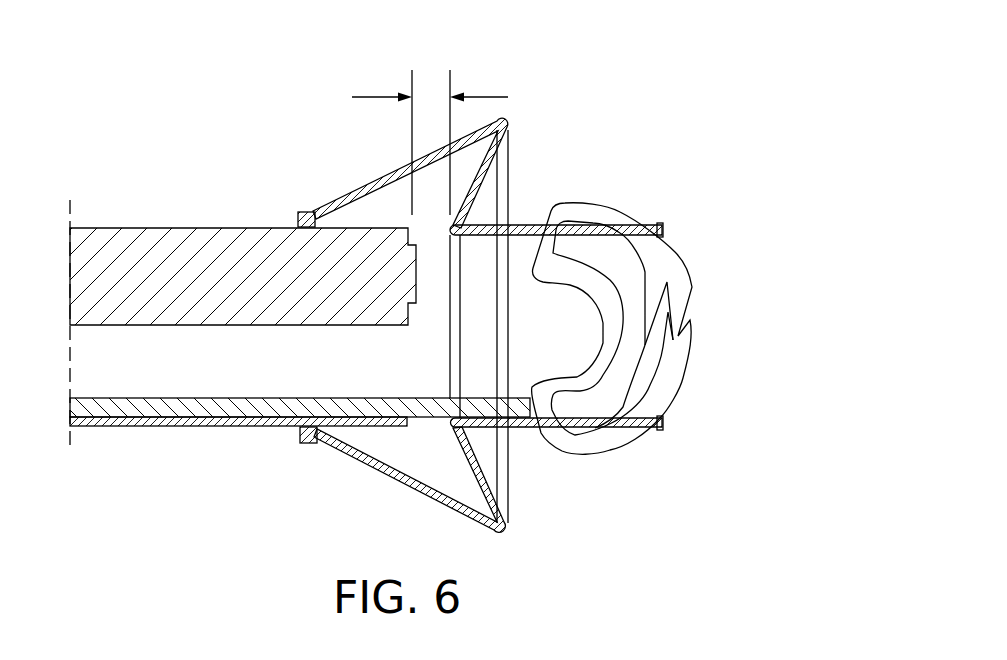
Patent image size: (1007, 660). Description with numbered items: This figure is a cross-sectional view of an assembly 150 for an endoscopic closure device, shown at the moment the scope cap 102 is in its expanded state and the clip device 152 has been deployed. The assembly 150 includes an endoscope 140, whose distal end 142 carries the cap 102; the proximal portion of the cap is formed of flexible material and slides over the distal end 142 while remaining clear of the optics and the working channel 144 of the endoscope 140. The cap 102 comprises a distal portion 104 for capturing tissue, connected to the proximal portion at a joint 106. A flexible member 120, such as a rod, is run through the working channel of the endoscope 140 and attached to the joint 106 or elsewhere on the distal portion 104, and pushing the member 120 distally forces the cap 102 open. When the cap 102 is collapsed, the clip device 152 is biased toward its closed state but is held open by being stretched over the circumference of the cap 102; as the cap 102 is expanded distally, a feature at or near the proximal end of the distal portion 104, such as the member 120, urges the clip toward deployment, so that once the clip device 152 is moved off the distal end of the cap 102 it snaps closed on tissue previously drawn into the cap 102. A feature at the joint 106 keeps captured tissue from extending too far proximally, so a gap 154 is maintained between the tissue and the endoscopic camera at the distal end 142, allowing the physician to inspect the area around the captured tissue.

The scope cap 102 is at (570, 140).
The distal portion 104 is at (700, 225).
The joint 106 is at (450, 240).
The flexible member 120 is at (526, 440).
The endoscope 140 is at (152, 206).
The distal end 142 is at (435, 381).
The working channel 144 is at (133, 378).
The assembly 150 is at (722, 130).
The clip device 152 is at (704, 375).
The gap 154 is at (435, 210).